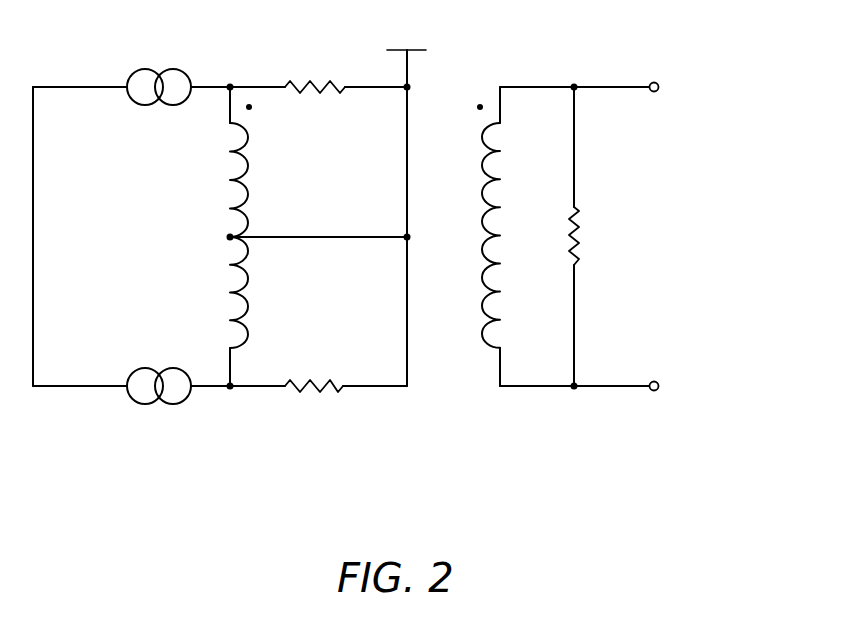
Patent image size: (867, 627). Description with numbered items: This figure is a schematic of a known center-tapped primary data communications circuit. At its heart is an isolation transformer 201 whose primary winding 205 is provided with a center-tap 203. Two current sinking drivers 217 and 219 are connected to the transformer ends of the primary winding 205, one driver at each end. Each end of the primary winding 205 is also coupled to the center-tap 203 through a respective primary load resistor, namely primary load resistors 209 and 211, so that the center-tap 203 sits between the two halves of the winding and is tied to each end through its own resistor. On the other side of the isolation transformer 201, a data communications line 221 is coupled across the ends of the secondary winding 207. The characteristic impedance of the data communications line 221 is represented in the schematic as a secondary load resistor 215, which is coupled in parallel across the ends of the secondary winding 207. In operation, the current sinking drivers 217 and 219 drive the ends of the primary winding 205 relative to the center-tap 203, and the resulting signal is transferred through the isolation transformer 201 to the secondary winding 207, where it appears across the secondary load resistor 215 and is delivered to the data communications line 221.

The isolation transformer 201 is at (368, 409).
The center-tap 203 is at (333, 237).
The primary winding 205 is at (234, 265).
The secondary winding 207 is at (488, 348).
The primary load resistor 209 is at (318, 82).
The primary load resistor 211 is at (308, 393).
The secondary load resistor 215 is at (600, 240).
The current sinking driver 217 is at (190, 75).
The current sinking driver 219 is at (172, 404).
The data communications line 221 is at (641, 126).